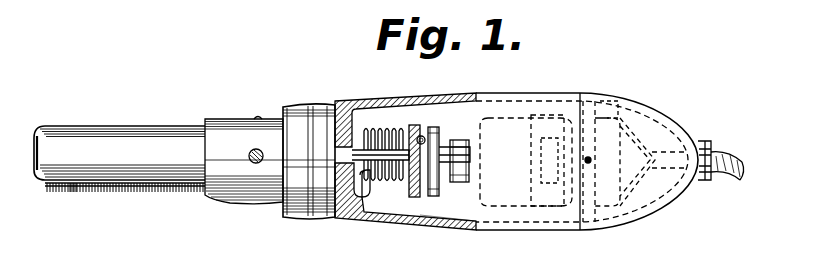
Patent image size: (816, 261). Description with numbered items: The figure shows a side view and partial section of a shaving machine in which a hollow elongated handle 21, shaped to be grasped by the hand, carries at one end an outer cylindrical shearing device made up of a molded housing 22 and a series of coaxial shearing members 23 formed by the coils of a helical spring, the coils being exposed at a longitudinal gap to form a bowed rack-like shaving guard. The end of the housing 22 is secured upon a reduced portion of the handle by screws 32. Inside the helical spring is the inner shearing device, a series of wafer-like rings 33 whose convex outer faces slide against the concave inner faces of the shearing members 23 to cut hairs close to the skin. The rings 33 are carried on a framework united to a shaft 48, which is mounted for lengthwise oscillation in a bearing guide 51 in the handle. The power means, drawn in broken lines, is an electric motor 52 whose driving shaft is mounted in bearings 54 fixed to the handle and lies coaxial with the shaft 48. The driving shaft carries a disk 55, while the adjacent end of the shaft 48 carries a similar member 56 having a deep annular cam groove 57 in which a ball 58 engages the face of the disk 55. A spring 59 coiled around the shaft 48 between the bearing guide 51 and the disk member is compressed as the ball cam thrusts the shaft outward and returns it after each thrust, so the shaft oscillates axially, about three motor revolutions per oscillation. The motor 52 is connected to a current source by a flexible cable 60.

The hollow elongated handle 21 is at (645, 116).
The housing 22 is at (154, 128).
The shearing members 23 is at (147, 193).
The screws 32 is at (250, 152).
The rings 33 is at (88, 195).
The shaft 48 is at (385, 150).
The bearing guide 51 is at (358, 200).
The electric motor 52 is at (606, 110).
The bearings 54 is at (460, 182).
The disk 55 is at (441, 132).
The member 56 is at (442, 212).
The cam groove 57 is at (415, 125).
The ball 58 is at (423, 136).
The spring 59 is at (370, 168).
The flexible cable 60 is at (731, 162).